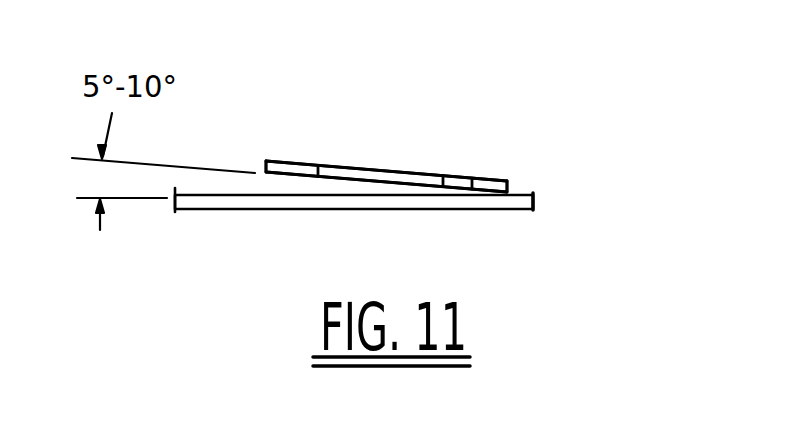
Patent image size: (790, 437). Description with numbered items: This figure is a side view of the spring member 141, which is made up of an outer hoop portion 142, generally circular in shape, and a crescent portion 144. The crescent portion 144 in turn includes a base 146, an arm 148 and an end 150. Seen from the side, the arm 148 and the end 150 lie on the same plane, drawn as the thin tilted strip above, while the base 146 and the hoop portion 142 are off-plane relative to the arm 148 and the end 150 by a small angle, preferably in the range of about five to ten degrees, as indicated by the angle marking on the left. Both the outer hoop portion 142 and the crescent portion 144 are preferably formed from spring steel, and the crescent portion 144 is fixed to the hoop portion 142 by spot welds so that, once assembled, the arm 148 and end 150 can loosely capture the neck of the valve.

The spring member 141 is at (502, 141).
The outer hoop portion 142 is at (183, 210).
The crescent portion 144 is at (335, 165).
The base 146 is at (511, 183).
The arm 148 is at (365, 169).
The end 150 is at (282, 162).